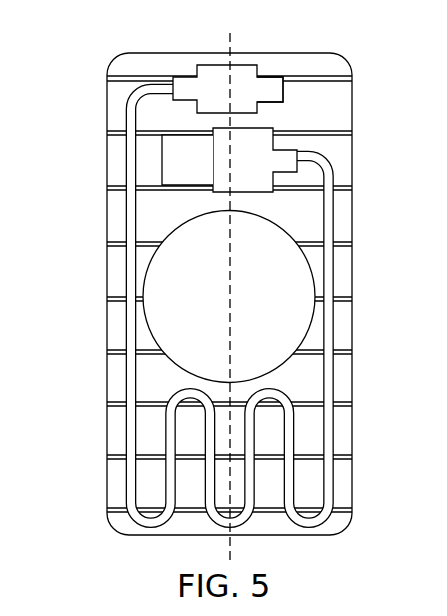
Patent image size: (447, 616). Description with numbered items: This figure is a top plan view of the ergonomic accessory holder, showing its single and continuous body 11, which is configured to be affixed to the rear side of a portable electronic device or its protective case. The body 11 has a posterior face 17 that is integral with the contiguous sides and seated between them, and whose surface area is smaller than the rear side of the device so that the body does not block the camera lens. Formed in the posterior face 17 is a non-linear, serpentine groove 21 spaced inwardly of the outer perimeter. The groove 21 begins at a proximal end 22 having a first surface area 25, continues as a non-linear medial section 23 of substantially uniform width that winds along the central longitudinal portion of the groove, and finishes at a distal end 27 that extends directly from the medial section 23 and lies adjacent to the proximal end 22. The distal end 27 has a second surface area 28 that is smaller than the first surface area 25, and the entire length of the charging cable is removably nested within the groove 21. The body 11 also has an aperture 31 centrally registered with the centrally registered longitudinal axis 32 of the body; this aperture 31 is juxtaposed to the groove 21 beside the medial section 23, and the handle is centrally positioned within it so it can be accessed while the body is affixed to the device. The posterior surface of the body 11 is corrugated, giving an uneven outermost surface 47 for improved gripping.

The body 11 is at (81, 136).
The posterior face 17 is at (333, 68).
The groove 21 is at (340, 323).
The proximal end 22 is at (262, 163).
The non-linear medial section 23 is at (245, 514).
The first surface area 25 is at (166, 165).
The distal end 27 is at (243, 75).
The second surface area 28 is at (277, 90).
The aperture 31 is at (267, 263).
The centrally registered longitudinal axis 32 is at (232, 293).
The corrugated uneven outermost surface 47 is at (351, 459).